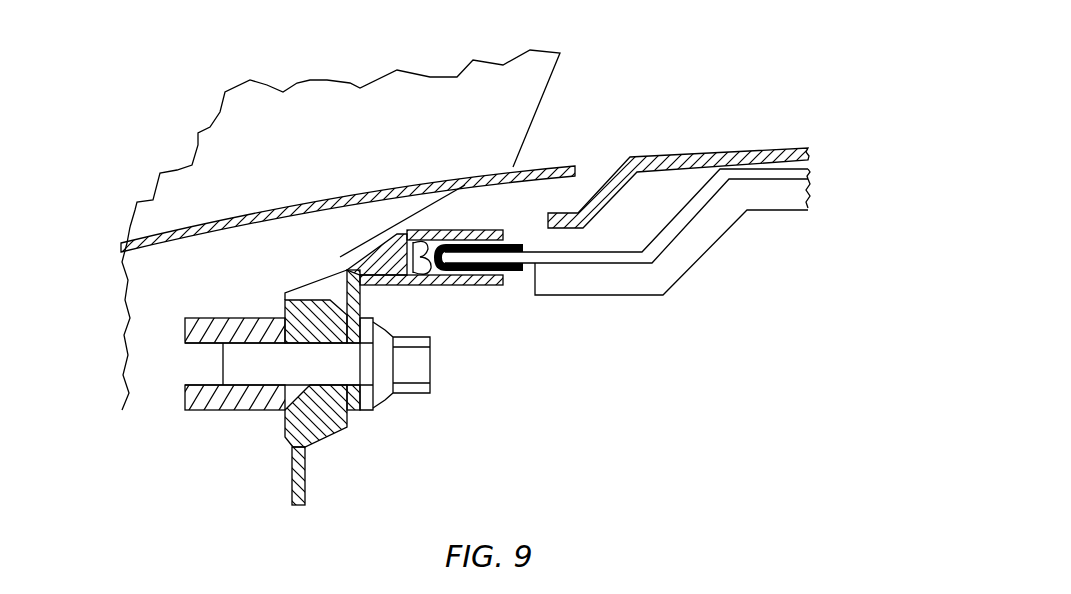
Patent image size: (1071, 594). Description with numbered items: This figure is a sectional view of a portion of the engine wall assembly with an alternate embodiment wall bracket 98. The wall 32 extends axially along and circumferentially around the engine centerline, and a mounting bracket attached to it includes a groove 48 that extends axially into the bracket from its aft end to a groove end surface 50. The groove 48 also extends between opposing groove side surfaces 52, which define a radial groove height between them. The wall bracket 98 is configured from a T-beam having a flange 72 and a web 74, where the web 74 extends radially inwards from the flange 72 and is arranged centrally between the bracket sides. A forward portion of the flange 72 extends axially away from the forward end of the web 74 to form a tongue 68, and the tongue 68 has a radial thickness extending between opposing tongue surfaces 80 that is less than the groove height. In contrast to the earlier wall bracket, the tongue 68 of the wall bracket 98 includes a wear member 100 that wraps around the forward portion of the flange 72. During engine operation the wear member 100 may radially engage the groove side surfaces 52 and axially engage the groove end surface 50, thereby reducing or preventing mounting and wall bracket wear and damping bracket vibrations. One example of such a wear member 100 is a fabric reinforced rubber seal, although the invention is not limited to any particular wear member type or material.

The wall 32 is at (777, 147).
The groove 48 is at (378, 276).
The groove end surface 50 is at (408, 255).
The groove side surfaces 52 is at (416, 232).
The tongue 68 is at (518, 277).
The flange 72 is at (812, 170).
The web 74 is at (813, 200).
The tongue surfaces 80 is at (516, 240).
The wall bracket 98 is at (713, 243).
The wear member 100 is at (466, 243).